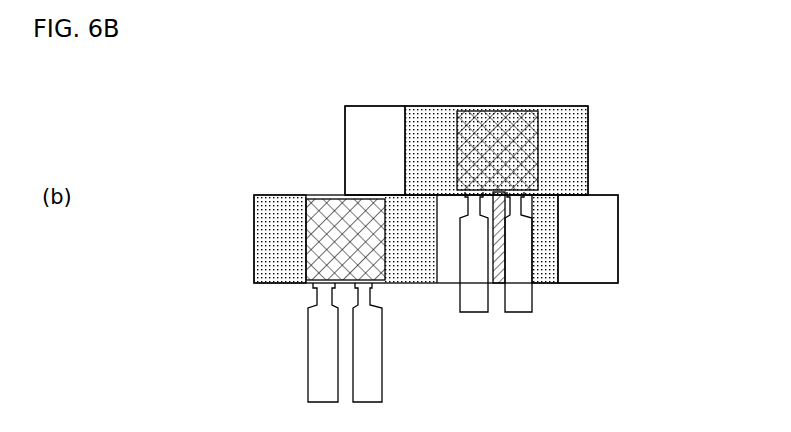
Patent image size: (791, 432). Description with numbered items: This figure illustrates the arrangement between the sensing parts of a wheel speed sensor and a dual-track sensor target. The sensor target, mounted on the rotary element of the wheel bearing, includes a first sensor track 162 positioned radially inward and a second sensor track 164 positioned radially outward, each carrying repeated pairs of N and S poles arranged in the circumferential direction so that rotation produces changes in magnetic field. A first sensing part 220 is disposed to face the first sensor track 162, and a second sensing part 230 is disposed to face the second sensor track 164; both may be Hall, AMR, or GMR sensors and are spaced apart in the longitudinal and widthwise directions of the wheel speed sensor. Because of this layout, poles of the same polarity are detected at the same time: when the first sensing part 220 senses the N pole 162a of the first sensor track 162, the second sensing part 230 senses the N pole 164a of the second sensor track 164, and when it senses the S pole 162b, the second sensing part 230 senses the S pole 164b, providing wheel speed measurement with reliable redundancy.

The first sensor track 162 is at (344, 146).
The N pole of the first sensor track 162a is at (367, 110).
The S pole of the first sensor track 162b is at (437, 110).
The first sensing part 220 is at (509, 110).
The second sensor track 164 is at (253, 239).
The N pole of the second sensor track 164a is at (598, 258).
The S pole of the second sensor track 164b is at (551, 284).
The second sensing part 230 is at (300, 272).